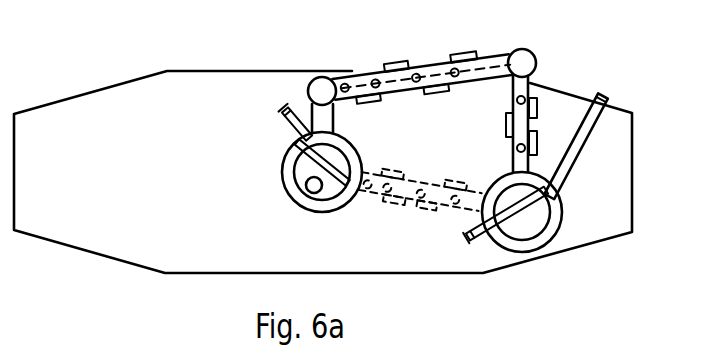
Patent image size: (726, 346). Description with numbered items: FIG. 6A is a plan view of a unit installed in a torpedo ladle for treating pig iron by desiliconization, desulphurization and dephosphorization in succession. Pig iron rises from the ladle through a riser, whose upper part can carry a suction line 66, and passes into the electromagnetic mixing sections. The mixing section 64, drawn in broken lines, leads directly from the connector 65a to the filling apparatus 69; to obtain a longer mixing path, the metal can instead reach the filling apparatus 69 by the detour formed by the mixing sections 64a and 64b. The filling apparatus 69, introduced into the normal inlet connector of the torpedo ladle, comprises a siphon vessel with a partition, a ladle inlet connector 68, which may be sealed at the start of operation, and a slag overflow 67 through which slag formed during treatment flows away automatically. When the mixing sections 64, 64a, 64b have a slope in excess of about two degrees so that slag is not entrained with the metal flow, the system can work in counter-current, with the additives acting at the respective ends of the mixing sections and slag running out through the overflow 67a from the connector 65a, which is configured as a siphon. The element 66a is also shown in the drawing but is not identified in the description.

The electromagnetic mixing section 64 is at (428, 210).
The detour mixing section 64a is at (357, 83).
The detour mixing section 64b is at (521, 128).
The connector configured as a siphon 65a is at (562, 213).
The suction line 66 is at (597, 96).
The bar in left rotary member 66a is at (332, 184).
The slag overflow 67 is at (287, 128).
The overflow 67a is at (475, 241).
The ladle inlet connector 68 is at (308, 192).
The filling apparatus 69 is at (290, 172).